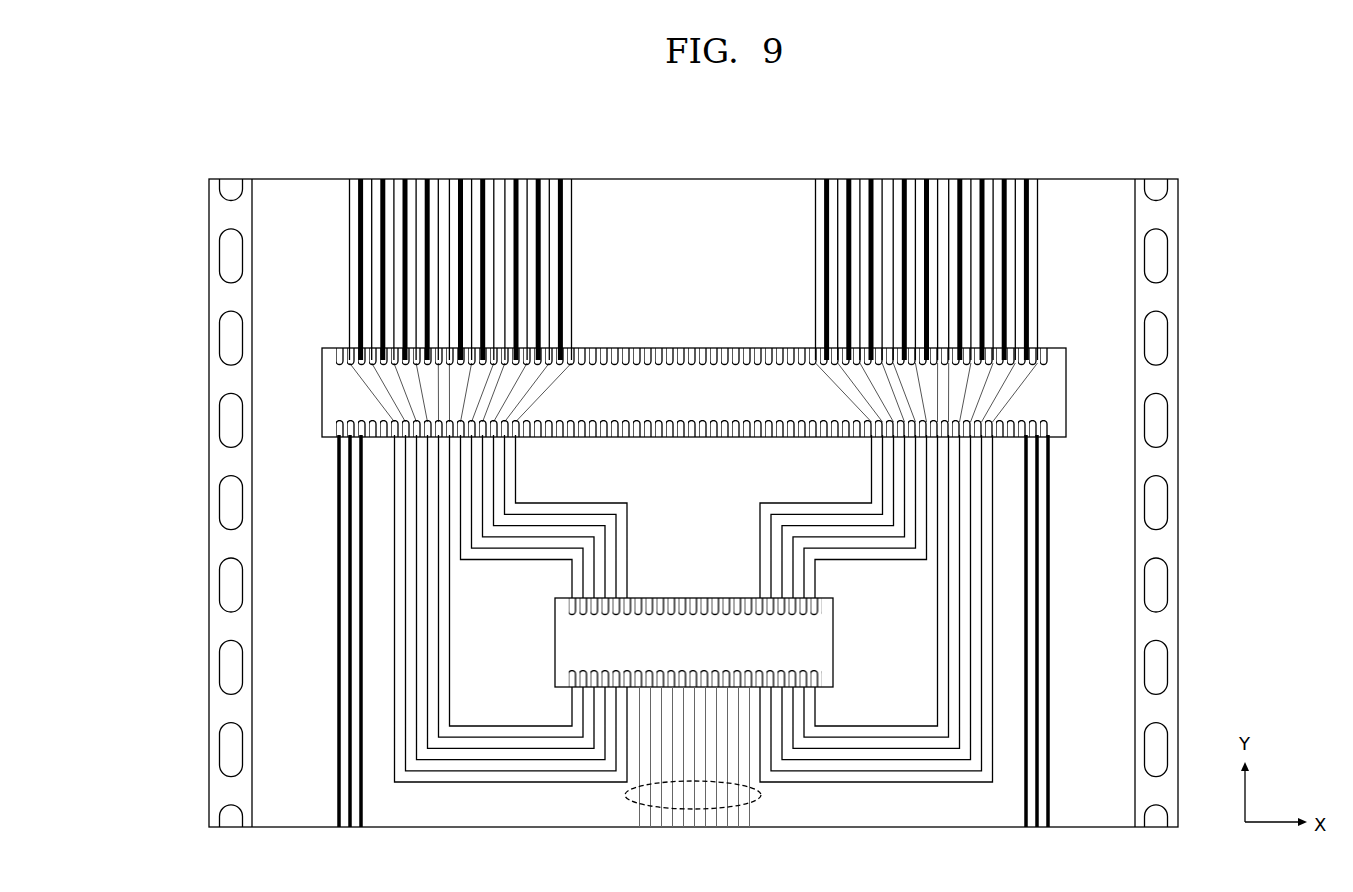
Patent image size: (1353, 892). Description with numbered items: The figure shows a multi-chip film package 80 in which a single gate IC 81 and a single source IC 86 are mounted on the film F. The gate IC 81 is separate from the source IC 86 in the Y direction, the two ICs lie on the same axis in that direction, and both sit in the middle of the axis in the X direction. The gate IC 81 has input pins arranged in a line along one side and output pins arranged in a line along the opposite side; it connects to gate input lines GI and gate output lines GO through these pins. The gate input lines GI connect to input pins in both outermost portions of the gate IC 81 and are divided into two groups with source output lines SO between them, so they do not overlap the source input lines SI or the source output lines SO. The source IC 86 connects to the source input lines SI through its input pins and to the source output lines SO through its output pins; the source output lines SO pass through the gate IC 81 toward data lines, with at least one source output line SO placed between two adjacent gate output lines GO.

The multi-chip film package 80 is at (1127, 137).
The film F is at (1107, 215).
The gate IC 81 is at (1066, 394).
The source IC 86 is at (820, 640).
The source output lines SO is at (349, 240).
The gate output lines GO is at (359, 289).
The gate input lines GI is at (338, 545).
The source input lines SI is at (776, 797).